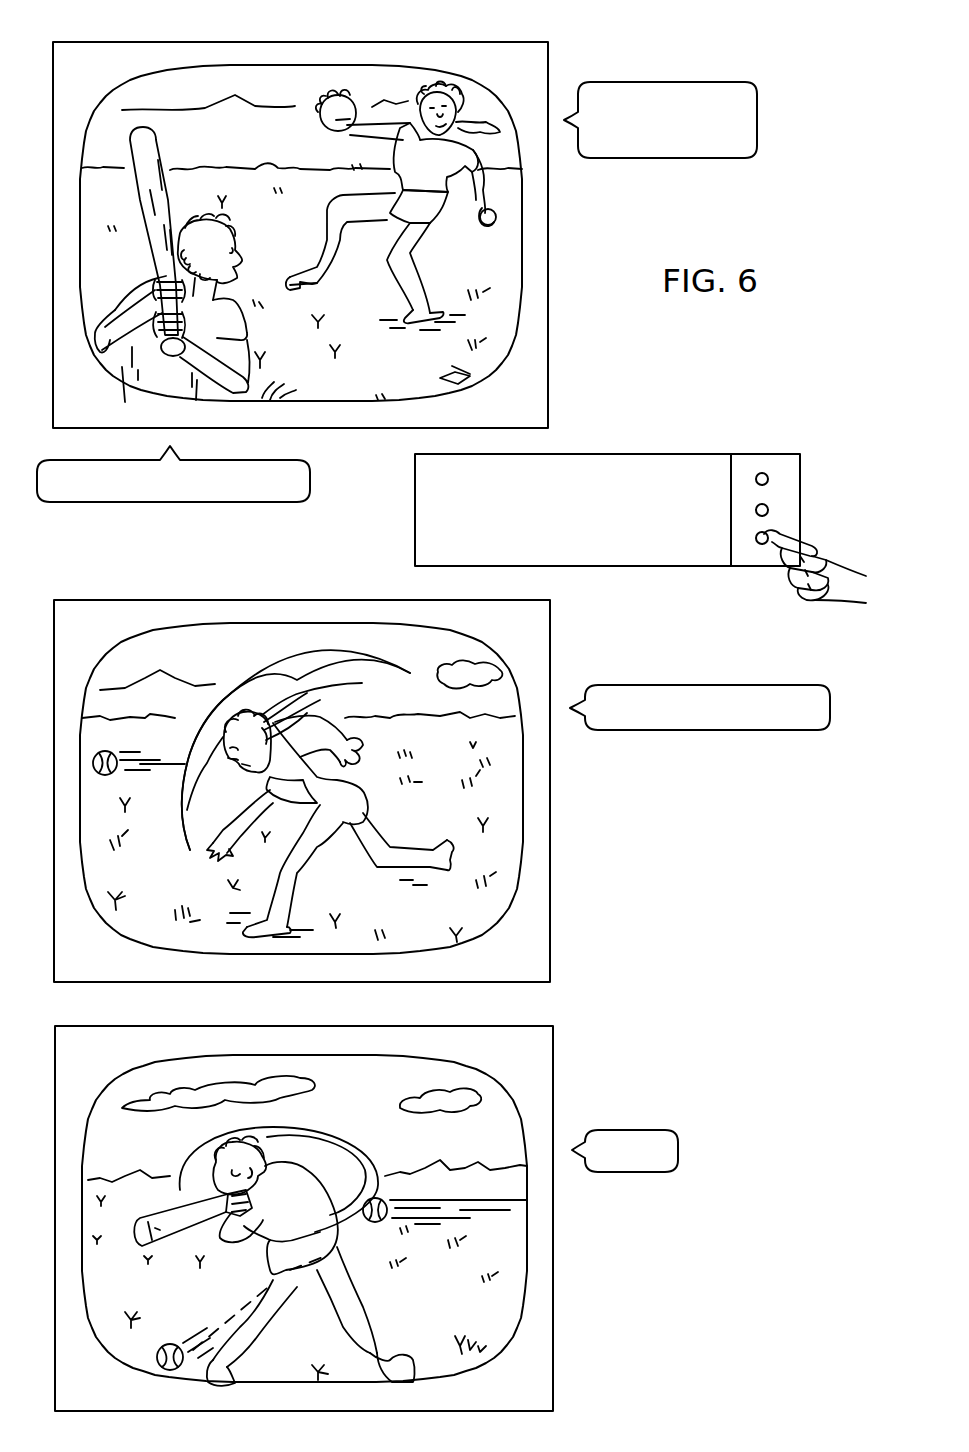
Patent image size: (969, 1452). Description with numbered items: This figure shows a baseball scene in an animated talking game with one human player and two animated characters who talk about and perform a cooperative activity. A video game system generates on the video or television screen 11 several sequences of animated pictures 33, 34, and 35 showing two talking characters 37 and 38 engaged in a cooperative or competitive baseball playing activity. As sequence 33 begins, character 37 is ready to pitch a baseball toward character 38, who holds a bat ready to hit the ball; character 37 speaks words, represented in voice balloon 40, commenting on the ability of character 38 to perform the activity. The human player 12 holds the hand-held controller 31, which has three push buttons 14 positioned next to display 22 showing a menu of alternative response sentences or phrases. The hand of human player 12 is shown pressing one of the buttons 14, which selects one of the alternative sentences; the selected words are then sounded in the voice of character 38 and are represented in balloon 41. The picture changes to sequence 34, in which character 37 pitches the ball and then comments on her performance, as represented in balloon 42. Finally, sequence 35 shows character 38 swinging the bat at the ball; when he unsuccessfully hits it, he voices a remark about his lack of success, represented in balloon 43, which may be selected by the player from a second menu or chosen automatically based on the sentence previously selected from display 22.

The video or television screen 11 is at (140, 95).
The human player 12 is at (830, 570).
The push buttons 14 is at (770, 480).
The display 22 is at (622, 470).
The hand-held controller 31 is at (631, 477).
The animated picture sequence 33 is at (510, 307).
The animated picture sequence 34 is at (502, 830).
The animated picture sequence 35 is at (514, 1265).
The talking character 37 is at (412, 275).
The talking character 38 is at (143, 385).
The voice balloon 40 is at (748, 113).
The balloon 41 is at (250, 496).
The balloon 42 is at (717, 720).
The balloon 43 is at (635, 1168).